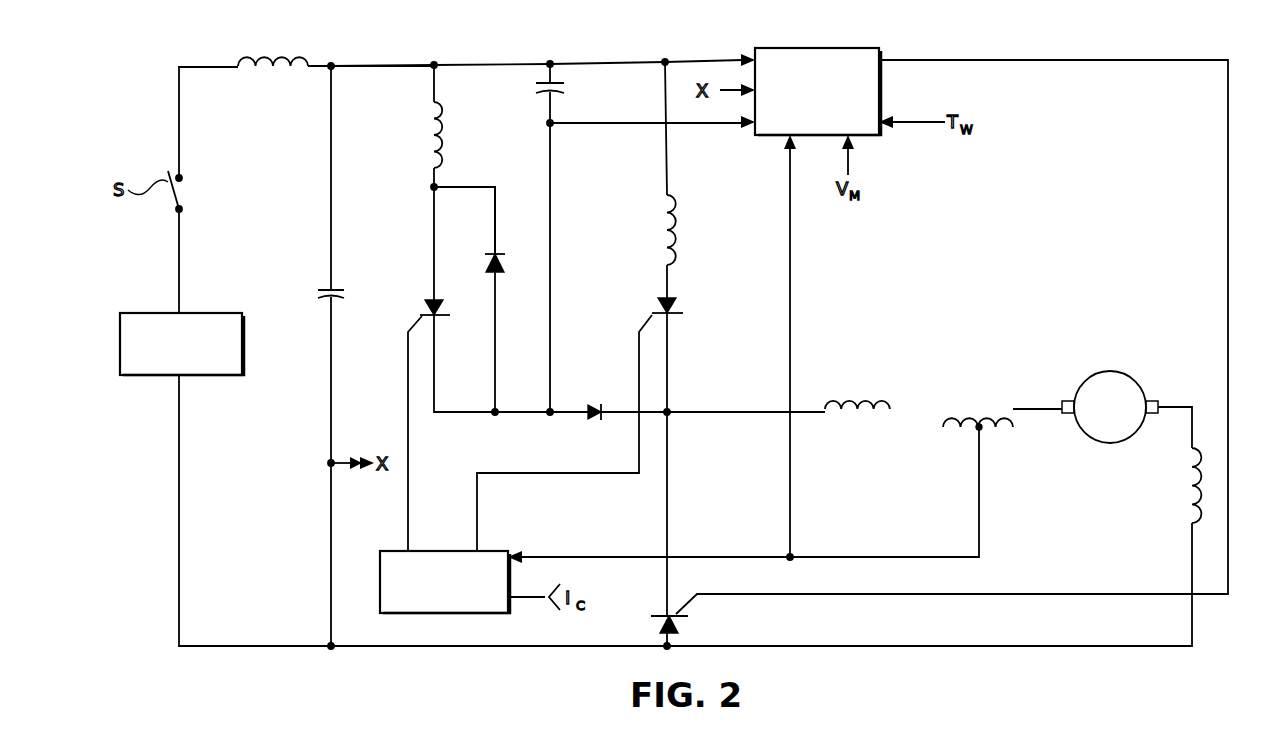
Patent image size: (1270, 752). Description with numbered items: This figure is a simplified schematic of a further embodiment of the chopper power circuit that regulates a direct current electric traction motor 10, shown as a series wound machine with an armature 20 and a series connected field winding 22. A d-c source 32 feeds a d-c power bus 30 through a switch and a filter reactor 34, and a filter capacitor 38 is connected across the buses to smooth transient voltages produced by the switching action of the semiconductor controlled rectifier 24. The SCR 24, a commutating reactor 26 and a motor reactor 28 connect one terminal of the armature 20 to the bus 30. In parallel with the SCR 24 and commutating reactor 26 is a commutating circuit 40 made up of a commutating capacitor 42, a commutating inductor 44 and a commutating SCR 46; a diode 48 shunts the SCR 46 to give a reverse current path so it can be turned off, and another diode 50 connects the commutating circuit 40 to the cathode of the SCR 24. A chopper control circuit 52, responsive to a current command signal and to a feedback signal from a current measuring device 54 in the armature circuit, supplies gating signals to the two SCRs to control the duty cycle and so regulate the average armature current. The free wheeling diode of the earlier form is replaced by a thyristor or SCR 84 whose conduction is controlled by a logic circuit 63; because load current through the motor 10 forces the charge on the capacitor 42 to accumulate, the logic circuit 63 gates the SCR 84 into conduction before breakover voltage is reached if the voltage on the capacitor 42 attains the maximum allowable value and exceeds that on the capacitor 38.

The direct current electric traction motor 10 is at (1131, 426).
The armature 20 is at (1104, 442).
The field winding 22 is at (1190, 490).
The semiconductor controlled rectifier 24 is at (684, 306).
The commutating reactor 26 is at (683, 244).
The motor reactor 28 is at (858, 392).
The d-c power bus 30 is at (402, 62).
The d-c source 32 is at (130, 312).
The filter reactor 34 is at (287, 58).
The filter capacitor 38 is at (322, 286).
The commutating circuit 40 is at (496, 129).
The commutating capacitor 42 is at (566, 88).
The commutating inductor 44 is at (430, 138).
The commutating SCR 46 is at (430, 304).
The diode 48 is at (500, 262).
The diode 50 is at (598, 396).
The chopper control circuit 52 is at (508, 546).
The current measuring device 54 is at (956, 434).
The logic circuit 63 is at (826, 44).
The thyristor or SCR 84 is at (685, 627).